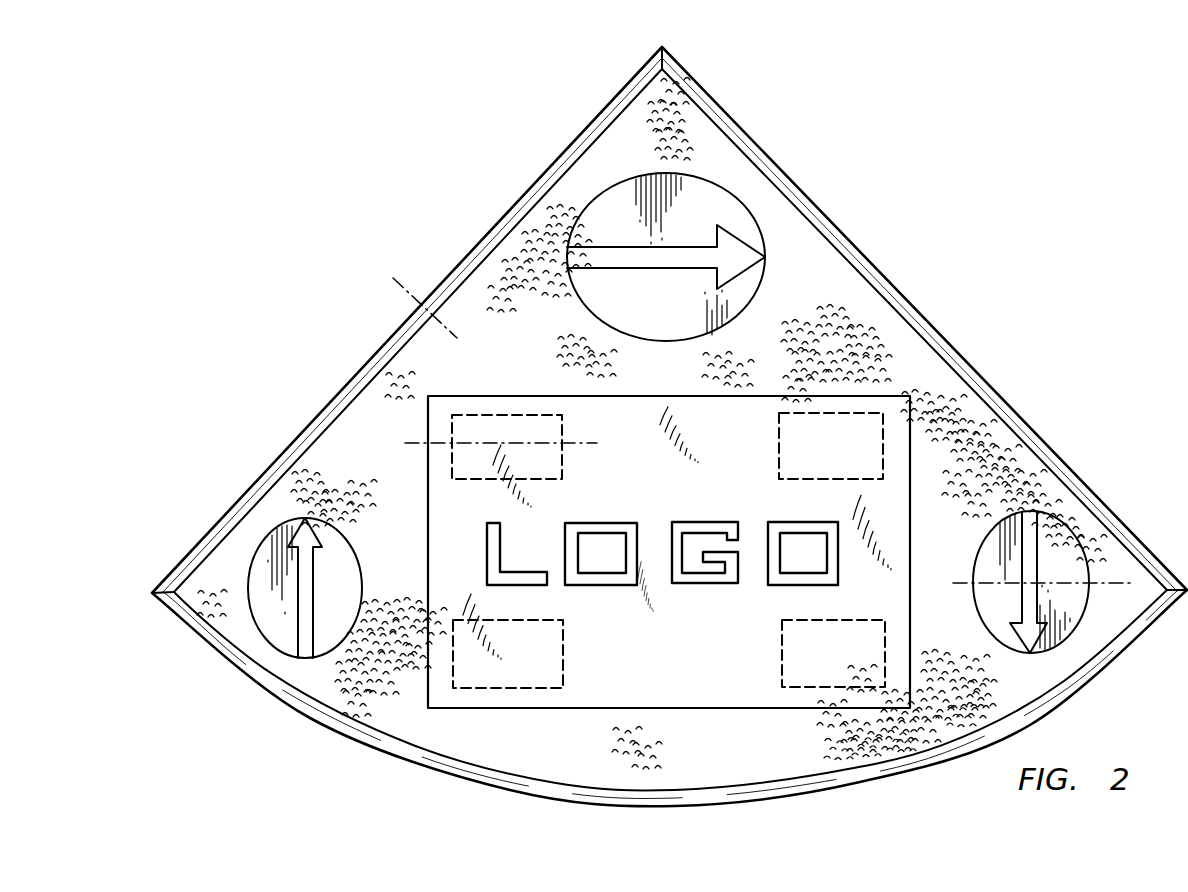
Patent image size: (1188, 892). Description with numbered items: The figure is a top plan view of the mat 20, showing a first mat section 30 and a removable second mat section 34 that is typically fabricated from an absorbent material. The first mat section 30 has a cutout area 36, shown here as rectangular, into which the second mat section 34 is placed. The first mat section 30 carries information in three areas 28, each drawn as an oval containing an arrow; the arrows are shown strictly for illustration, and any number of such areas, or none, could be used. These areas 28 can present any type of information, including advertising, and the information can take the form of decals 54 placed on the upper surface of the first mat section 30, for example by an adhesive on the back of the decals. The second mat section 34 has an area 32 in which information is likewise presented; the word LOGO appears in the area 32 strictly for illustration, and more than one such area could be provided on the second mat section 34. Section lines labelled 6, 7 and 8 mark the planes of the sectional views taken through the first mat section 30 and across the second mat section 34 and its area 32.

The wedge-shaped panel body 20 is at (499, 187).
The informational areas 28 is at (712, 185).
The first mat section 30 is at (796, 312).
The informational area 32 is at (697, 658).
The second mat section 34 is at (549, 720).
The cutout area 36 is at (428, 506).
The decals 54 is at (348, 604).
The section line 6- 6 is at (482, 316).
The section line 7- 7 is at (597, 427).
The section line 8- 8 is at (1113, 565).